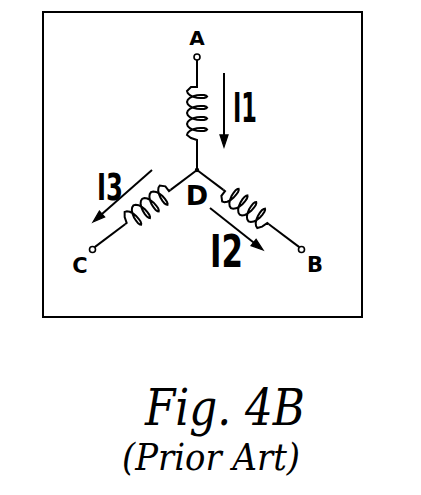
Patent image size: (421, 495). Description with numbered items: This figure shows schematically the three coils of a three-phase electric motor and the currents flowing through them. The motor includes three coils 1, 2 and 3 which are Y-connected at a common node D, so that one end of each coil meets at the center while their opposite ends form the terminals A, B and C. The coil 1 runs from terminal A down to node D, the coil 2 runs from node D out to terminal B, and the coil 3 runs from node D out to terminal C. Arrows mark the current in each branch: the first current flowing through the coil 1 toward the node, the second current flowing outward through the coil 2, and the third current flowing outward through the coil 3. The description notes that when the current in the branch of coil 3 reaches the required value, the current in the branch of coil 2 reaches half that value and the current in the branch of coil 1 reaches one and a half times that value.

The coil 1 is at (175, 114).
The coil 2 is at (251, 192).
The coil 3 is at (157, 209).